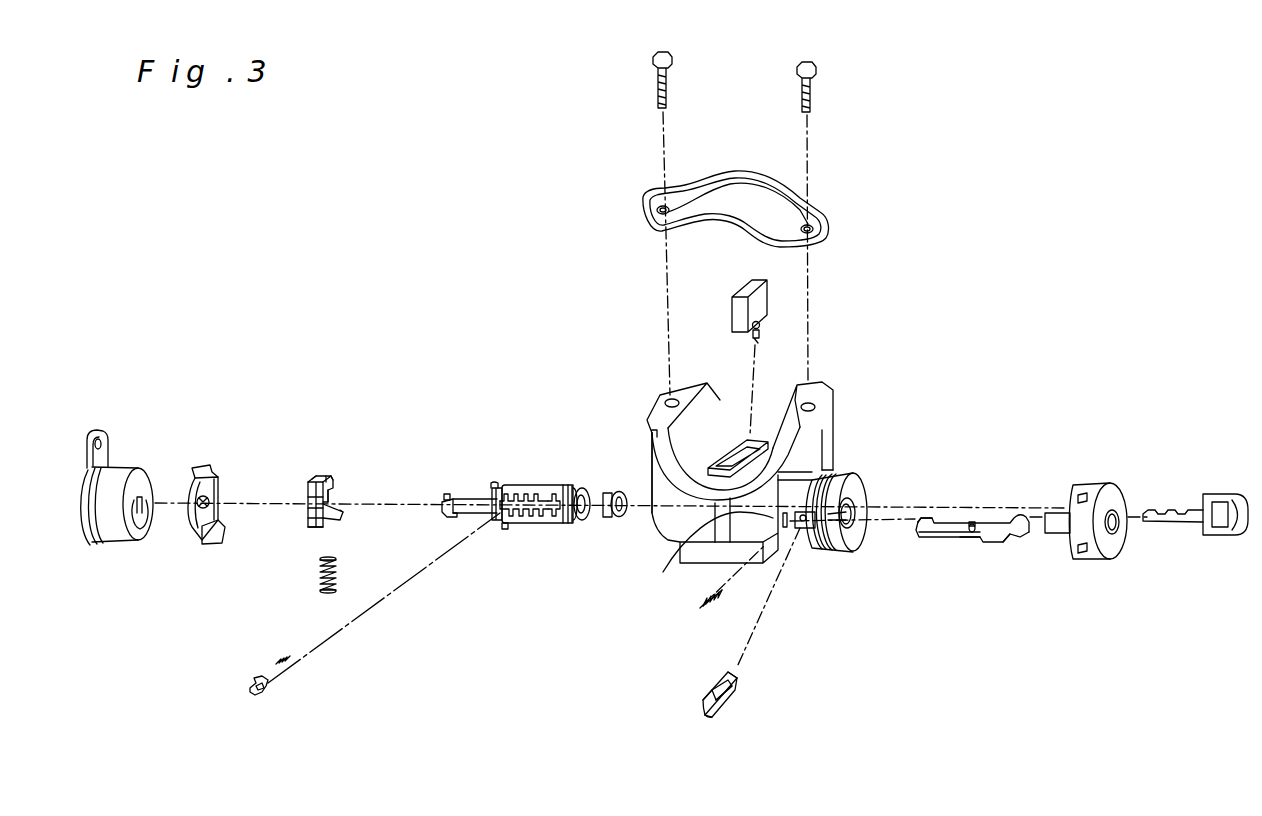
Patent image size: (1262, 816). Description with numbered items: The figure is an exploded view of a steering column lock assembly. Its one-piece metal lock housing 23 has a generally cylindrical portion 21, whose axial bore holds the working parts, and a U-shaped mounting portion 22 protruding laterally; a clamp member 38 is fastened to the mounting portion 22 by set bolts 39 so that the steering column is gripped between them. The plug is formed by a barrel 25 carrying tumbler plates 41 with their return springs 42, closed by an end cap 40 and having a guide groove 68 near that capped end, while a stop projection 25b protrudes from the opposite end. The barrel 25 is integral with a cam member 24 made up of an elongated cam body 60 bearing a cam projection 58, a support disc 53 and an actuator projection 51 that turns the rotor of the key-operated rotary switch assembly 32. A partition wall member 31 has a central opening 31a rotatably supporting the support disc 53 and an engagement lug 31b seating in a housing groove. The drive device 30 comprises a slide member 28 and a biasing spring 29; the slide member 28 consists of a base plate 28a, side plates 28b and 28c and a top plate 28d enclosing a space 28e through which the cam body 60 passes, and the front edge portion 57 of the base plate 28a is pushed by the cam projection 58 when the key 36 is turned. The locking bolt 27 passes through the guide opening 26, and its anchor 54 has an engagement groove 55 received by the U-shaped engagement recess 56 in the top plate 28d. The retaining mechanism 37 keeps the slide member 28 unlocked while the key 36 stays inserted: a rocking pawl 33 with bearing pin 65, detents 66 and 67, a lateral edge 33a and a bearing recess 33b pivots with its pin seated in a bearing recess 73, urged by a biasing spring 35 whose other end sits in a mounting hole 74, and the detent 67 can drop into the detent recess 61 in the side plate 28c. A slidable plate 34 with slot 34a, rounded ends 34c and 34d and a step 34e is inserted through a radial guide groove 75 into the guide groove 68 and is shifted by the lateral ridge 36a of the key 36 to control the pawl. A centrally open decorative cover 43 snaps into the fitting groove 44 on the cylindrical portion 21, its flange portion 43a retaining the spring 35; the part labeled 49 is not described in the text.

The cylindrical portion 21 is at (727, 515).
The mounting portion 22 is at (833, 402).
The lock housing 23 is at (645, 407).
The cam member 24 is at (488, 482).
The barrel 25 is at (520, 486).
The stop projection 25b is at (505, 530).
The guide opening 26 is at (740, 448).
The locking bolt 27 is at (740, 312).
The slide member 28 is at (312, 478).
The base plate 28a is at (330, 528).
The side plate 28b is at (337, 493).
The side plate 28c is at (306, 510).
The top plate 28d is at (317, 476).
The rectangular space 28e is at (336, 483).
The biasing spring 29 is at (318, 578).
The drive device 30 is at (316, 568).
The partition wall member 31 is at (189, 522).
The central opening 31a is at (210, 465).
The engagement lug 31b is at (215, 545).
The rotary switch assembly 32 is at (118, 472).
The rocking pawl 33 is at (922, 548).
The lateral edge 33a is at (965, 543).
The bearing recess 33b is at (1010, 546).
The slidable plate 34 is at (740, 688).
The slot 34a is at (720, 705).
The rounded end 34c is at (727, 673).
The rounded end 34d is at (707, 713).
The step 34e is at (712, 691).
The biasing spring 35 is at (703, 600).
The key 36 is at (1220, 494).
The lateral ridge 36a is at (1170, 512).
The retaining mechanism 37 is at (733, 603).
The clamp member 38 is at (720, 218).
The set bolts 39 is at (668, 90).
The end cap 40 is at (610, 491).
The tumbler plates 41 is at (265, 690).
The return springs 42 is at (275, 659).
The decorative cover 43 is at (1094, 484).
The flange portion 43a is at (1057, 513).
The fitting groove 44 is at (860, 478).
The flange 49 is at (88, 430).
The actuator projection 51 is at (444, 494).
The support disc 53 is at (442, 510).
The anchor 54 is at (759, 338).
The engagement groove 55 is at (760, 322).
The engagement recess 56 is at (328, 476).
The front edge portion 57 is at (343, 511).
The cam projection 58 is at (496, 482).
The cam body 60 is at (495, 515).
The detent recess 61 is at (316, 500).
The bearing pin 65 is at (972, 522).
The detent 66 is at (1032, 522).
The detent 67 is at (921, 518).
The guide groove 68 is at (570, 523).
The bearing recess 73 is at (780, 535).
The mounting hole 74 is at (800, 529).
The radial guide groove 75 is at (848, 538).